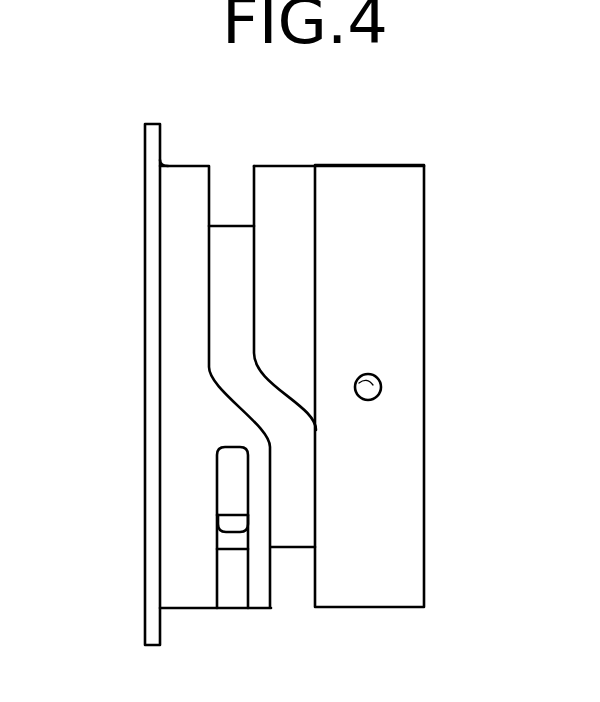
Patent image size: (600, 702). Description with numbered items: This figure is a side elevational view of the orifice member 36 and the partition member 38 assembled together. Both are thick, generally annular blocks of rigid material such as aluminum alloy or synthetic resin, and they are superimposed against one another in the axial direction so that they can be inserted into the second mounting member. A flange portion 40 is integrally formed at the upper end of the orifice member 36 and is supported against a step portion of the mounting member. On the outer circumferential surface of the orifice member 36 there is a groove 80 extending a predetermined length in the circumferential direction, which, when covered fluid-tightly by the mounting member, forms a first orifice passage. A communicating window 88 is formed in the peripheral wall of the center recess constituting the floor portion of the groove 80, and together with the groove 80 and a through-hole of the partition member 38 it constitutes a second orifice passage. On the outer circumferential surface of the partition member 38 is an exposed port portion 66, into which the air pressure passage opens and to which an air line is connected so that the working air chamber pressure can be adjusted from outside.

The flange portion 40 is at (157, 300).
The orifice member 36 is at (190, 401).
The groove 80 is at (255, 282).
The communicating window 88 is at (232, 515).
The partition member 38 is at (388, 292).
The port portion 66 is at (381, 384).